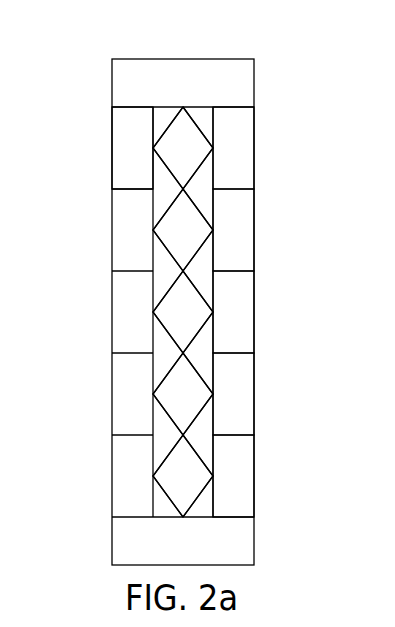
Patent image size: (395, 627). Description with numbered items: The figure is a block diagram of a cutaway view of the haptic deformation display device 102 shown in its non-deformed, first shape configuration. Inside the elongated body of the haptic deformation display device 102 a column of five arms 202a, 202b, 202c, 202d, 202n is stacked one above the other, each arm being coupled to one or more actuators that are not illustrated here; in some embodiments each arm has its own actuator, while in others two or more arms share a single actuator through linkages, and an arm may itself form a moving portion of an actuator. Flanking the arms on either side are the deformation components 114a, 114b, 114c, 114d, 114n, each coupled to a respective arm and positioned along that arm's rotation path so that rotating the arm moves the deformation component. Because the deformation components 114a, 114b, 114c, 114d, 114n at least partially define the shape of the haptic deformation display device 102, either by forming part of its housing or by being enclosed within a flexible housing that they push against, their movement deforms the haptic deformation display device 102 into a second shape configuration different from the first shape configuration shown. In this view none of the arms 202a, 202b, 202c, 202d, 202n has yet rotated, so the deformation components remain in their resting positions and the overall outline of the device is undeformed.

The haptic deformation display device 102 is at (66, 59).
The deformation component 114a is at (118, 148).
The deformation component 114b is at (248, 231).
The deformation component 114c is at (248, 313).
The deformation component 114d is at (248, 396).
The deformation component 114n is at (248, 478).
The arm 202a is at (202, 156).
The arm 202b is at (202, 238).
The arm 202c is at (202, 320).
The arm 202d is at (202, 402).
The arm 202n is at (202, 484).